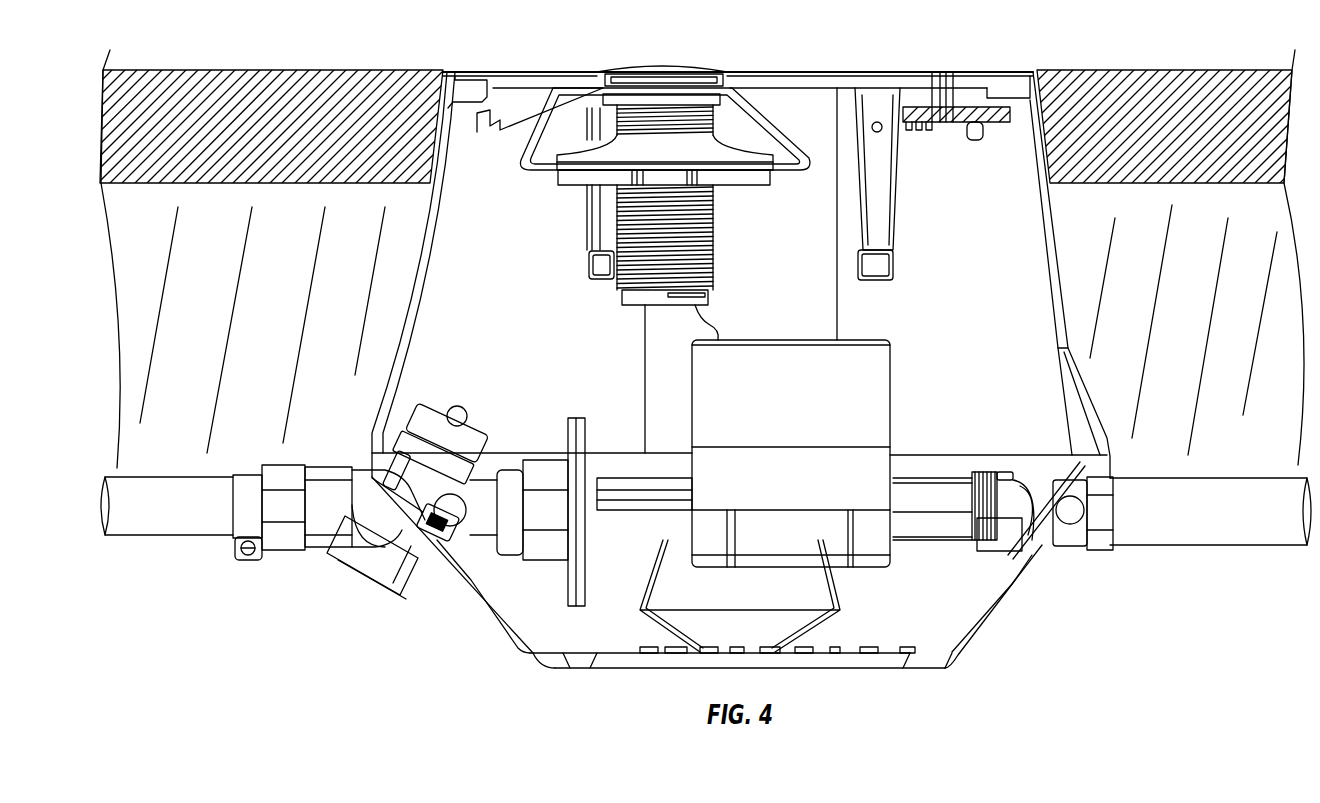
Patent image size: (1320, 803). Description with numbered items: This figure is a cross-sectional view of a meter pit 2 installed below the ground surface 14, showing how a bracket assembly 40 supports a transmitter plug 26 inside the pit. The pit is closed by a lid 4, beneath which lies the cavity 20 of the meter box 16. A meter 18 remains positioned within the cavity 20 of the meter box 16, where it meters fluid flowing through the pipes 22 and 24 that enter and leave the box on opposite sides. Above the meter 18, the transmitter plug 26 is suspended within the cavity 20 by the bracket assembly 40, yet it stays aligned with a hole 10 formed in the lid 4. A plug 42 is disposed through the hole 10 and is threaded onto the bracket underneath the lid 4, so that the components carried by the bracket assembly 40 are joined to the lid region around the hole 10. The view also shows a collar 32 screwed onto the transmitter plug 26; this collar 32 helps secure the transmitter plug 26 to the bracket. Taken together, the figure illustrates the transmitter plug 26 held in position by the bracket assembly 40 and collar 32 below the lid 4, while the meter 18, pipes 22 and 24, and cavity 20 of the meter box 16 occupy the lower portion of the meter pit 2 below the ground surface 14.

The meter pit 2 is at (1064, 60).
The lid 4 is at (872, 70).
The hole 10 is at (605, 78).
The ground surface 14 is at (290, 66).
The meter box 16 is at (1057, 232).
The meter 18 is at (890, 403).
The cavity 20 is at (455, 314).
The pipe 22 is at (150, 480).
The pipe 24 is at (1203, 482).
The transmitter plug 26 is at (576, 210).
The collar 32 is at (735, 188).
The bracket assembly 40 is at (781, 76).
The plug 42 is at (662, 66).